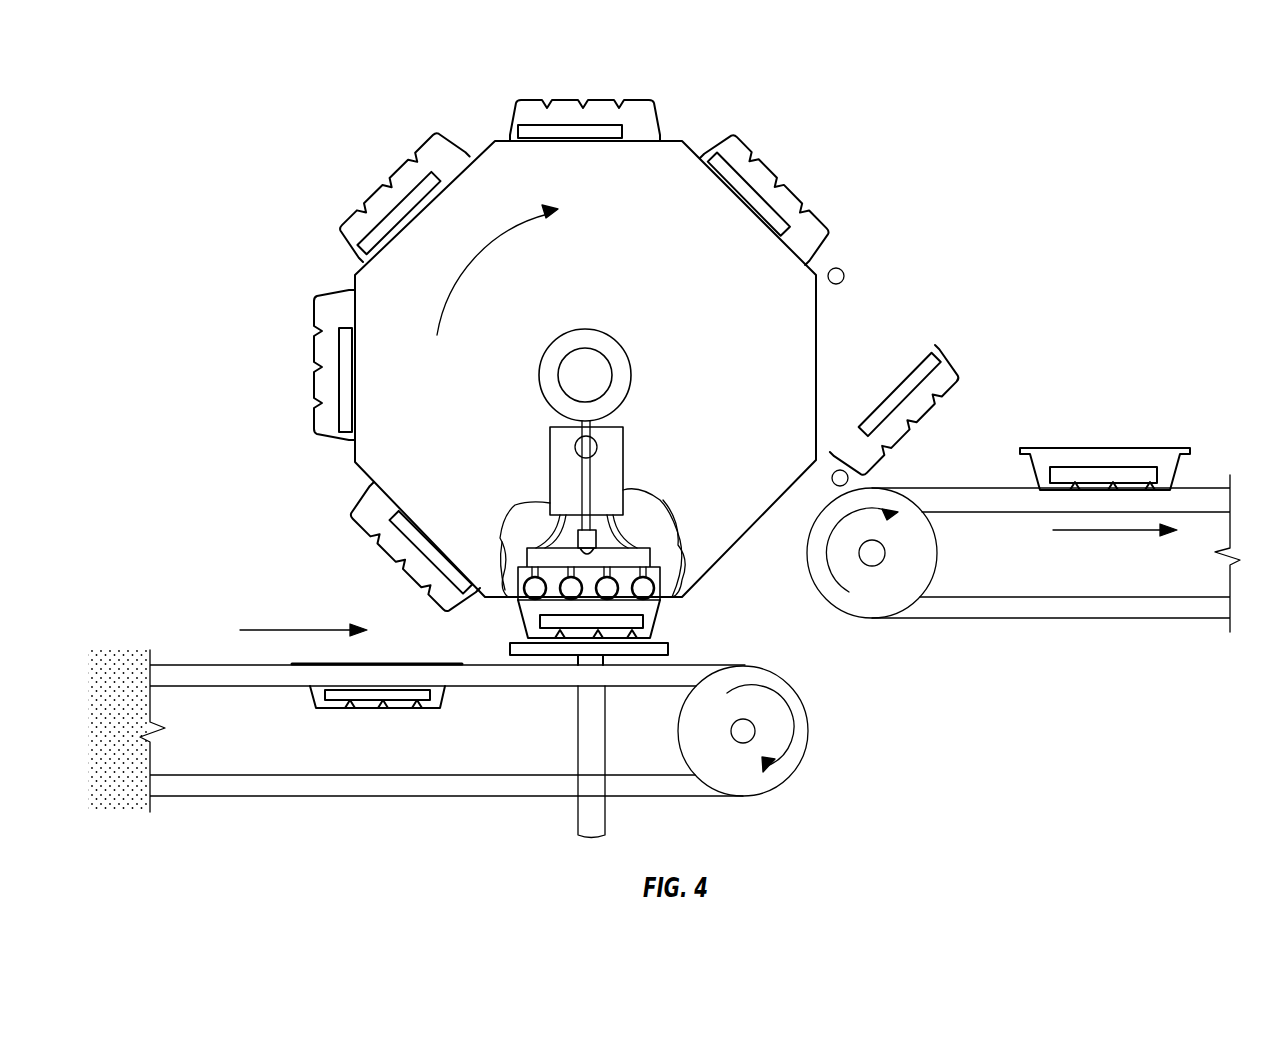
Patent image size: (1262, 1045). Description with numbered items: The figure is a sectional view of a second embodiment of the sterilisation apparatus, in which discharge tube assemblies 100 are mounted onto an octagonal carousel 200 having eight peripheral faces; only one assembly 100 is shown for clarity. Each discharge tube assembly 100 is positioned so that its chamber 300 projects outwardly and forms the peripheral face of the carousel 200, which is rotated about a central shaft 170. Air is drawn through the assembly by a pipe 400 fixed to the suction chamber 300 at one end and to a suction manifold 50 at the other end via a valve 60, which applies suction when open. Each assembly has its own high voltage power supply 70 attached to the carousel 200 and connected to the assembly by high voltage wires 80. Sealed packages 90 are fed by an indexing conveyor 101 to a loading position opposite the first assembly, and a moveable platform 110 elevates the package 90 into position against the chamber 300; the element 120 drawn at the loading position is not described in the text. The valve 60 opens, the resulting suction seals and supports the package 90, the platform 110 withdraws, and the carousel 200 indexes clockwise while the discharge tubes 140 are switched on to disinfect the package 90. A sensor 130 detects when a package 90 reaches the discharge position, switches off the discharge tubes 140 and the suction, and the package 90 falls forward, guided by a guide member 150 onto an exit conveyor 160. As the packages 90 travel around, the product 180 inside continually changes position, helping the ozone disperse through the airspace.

The suction manifold 50 is at (626, 368).
The valve 60 is at (575, 447).
The high voltage power supply 70 is at (623, 433).
The high voltage wires 80 is at (545, 540).
The sealed package 90 is at (632, 100).
The discharge tube assembly 100 is at (680, 548).
The indexing conveyor 101 is at (685, 790).
The moveable platform 110 is at (690, 650).
The tray 120 is at (630, 600).
The sensor 130 is at (845, 275).
The discharge tubes 140 is at (502, 542).
The guide member 150 is at (832, 476).
The exit conveyor 160 is at (975, 508).
The central shaft 170 is at (589, 355).
The product 180 is at (397, 543).
The carousel 200 is at (805, 318).
The chamber 300 is at (548, 600).
The pipe 400 is at (592, 474).